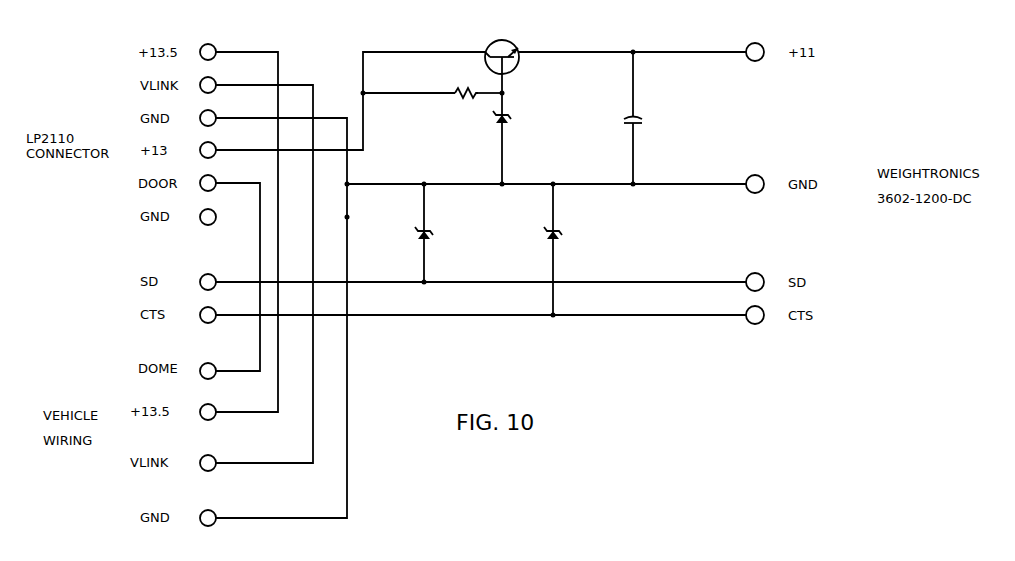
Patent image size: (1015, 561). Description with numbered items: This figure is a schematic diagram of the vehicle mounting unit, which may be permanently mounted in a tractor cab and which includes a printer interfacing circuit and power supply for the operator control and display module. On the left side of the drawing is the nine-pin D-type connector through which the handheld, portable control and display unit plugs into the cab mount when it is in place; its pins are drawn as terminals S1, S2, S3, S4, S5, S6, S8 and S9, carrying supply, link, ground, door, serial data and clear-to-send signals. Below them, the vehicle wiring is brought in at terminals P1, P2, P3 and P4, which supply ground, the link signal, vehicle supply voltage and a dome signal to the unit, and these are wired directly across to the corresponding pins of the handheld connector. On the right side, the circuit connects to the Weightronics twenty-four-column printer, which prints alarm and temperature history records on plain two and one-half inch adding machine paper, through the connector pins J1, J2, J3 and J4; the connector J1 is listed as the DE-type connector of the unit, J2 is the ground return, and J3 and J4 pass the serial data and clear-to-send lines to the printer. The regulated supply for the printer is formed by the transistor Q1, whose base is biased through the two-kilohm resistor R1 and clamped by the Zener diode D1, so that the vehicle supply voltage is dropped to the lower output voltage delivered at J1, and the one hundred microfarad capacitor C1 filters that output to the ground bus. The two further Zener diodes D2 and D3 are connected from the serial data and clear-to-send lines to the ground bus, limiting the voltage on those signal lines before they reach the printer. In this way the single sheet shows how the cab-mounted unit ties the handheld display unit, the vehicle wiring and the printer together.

The connector pin S1 (+13.5) S1 is at (216, 47).
The connector pin S2 (VLINK) S2 is at (216, 80).
The connector pin S3 (GND) S3 is at (216, 113).
The connector pin S4 (+13) S4 is at (216, 145).
The connector pin S5 (DOOR) S5 is at (216, 178).
The connector pin S6 (GND) S6 is at (216, 211).
The connector pin S8 (SD) S8 is at (216, 276).
The connector pin S9 (CTS) S9 is at (216, 309).
The vehicle wiring pin P4 (DOME) P4 is at (216, 365).
The vehicle wiring pin P3 (+13.5) P3 is at (215, 406).
The vehicle wiring pin P2 (VLINK) P2 is at (215, 457).
The vehicle wiring pin P1 (GND) P1 is at (215, 513).
The connector J1 is at (742, 46).
The Weightronics connector pin J2 (GND) J2 is at (742, 178).
The Weightronics connector pin J3 (SD) J3 is at (742, 276).
The Weightronics connector pin J4 (CTS) J4 is at (742, 309).
The transistor Q1 is at (505, 55).
The resistor R1 is at (461, 80).
The Zener diode D1 is at (537, 115).
The Zener diode D2 is at (459, 229).
The Zener diode D3 is at (588, 229).
The capacitor C1 is at (640, 120).